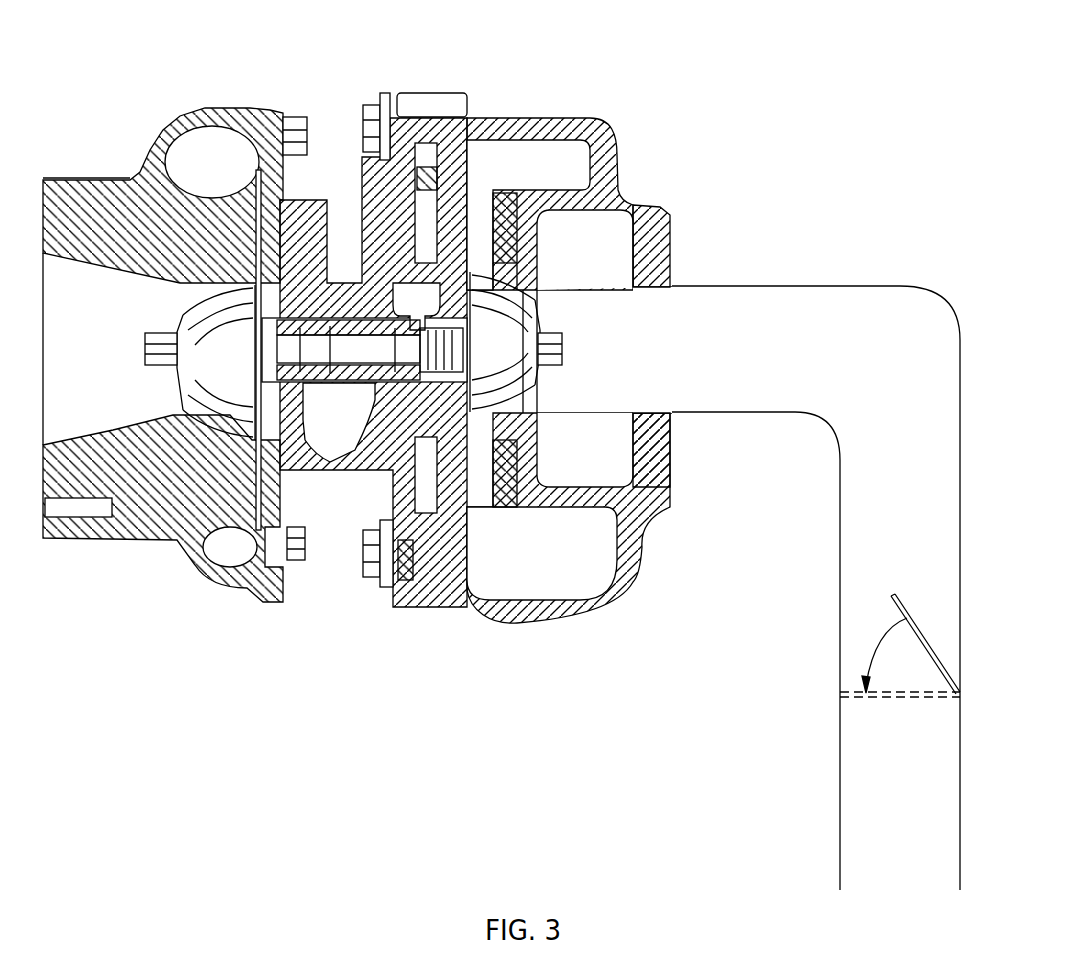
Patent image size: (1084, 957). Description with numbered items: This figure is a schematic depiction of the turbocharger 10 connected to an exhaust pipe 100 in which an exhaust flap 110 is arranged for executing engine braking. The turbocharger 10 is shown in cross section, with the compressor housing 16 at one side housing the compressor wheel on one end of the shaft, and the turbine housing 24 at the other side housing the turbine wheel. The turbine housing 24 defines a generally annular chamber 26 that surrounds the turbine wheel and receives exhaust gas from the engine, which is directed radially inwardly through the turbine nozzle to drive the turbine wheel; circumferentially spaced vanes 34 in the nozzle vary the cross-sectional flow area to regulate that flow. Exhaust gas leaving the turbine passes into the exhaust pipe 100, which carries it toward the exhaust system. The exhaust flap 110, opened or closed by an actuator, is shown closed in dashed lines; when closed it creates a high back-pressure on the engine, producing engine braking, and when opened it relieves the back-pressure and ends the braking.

The turbocharger 10 is at (282, 83).
The compressor housing 16 is at (130, 178).
The turbine housing 24 is at (630, 205).
The annular chamber 26 is at (523, 170).
The vanes 34 is at (480, 440).
The exhaust pipe 100 is at (870, 295).
The exhaust flap 110 is at (918, 642).